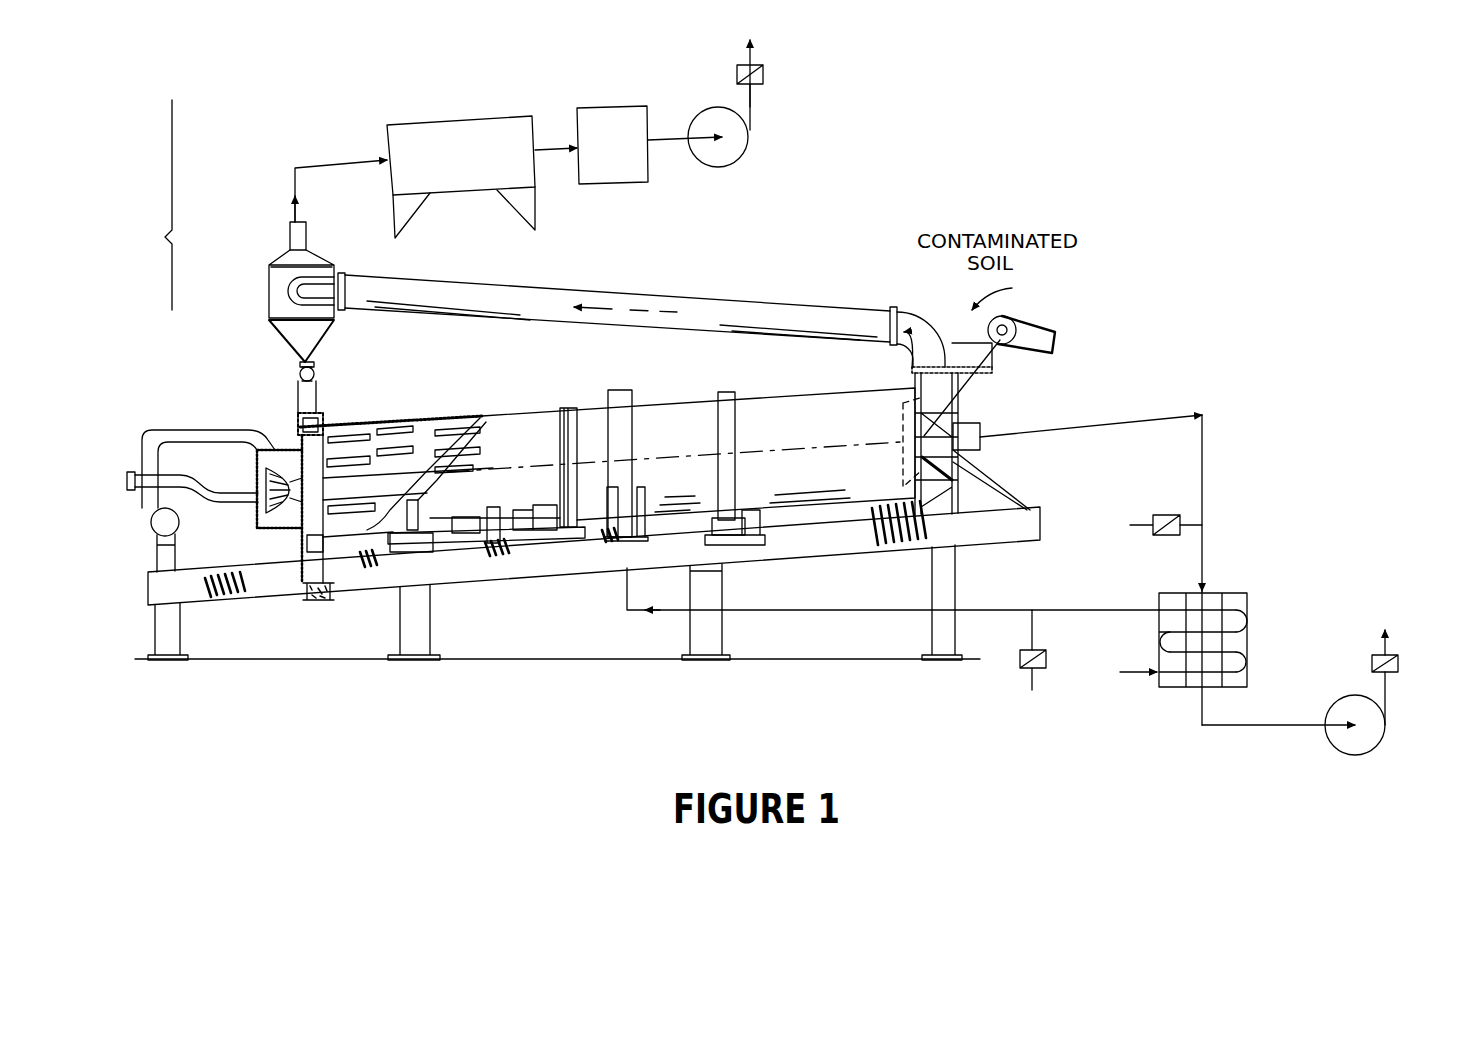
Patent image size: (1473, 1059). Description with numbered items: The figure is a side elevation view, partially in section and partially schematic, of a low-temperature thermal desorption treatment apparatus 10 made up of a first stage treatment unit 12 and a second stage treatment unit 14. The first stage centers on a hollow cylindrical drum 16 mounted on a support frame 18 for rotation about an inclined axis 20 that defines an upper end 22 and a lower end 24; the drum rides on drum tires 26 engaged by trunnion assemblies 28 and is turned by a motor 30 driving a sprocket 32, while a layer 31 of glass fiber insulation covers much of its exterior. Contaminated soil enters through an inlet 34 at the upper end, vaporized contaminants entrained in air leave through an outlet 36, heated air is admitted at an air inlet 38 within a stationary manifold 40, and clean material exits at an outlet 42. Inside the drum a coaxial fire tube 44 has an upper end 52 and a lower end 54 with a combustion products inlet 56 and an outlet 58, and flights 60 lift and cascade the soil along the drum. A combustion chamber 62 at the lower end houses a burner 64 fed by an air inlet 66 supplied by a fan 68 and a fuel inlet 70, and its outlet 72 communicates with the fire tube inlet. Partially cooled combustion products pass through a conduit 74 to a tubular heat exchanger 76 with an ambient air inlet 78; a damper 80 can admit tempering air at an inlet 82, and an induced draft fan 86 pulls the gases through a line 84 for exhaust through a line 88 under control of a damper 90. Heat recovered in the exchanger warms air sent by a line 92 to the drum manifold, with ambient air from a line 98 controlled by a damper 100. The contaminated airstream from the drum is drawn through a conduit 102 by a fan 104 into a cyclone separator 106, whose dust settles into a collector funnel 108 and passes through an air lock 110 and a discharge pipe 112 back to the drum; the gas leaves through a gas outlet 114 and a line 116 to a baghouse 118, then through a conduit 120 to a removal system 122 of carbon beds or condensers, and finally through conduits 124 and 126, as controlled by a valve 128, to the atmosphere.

The treatment apparatus 10 is at (975, 100).
The first stage treatment unit 12 is at (540, 365).
The second stage treatment unit 14 is at (150, 205).
The drum 16 is at (817, 392).
The support frame 18 is at (552, 572).
The axis 20 is at (820, 455).
The upper end 22 is at (908, 380).
The lower end 24 is at (300, 418).
The drum tires 26 is at (735, 433).
The trunnion assemblies 28 is at (748, 522).
The motor 30 is at (546, 505).
The layer of glass fiber thermal insulation 31 is at (360, 427).
The sprocket 32 is at (560, 462).
The inlet 34 is at (972, 393).
The outlet 36 is at (915, 390).
The air inlet 38 is at (636, 497).
The manifold 40 is at (633, 432).
The outlet 42 is at (330, 600).
The fire tube 44 is at (455, 430).
The upper end 52 is at (978, 422).
The lower end 54 is at (302, 535).
The inlet 56 is at (308, 488).
The outlet 58 is at (1032, 430).
The flights 60 is at (410, 446).
The combustion chamber 62 is at (255, 532).
The burner 64 is at (262, 494).
The air inlet 66 is at (262, 440).
The fan 68 is at (148, 545).
The fuel inlet 70 is at (118, 480).
The outlet 72 is at (270, 470).
The conduit 74 is at (1140, 418).
The tubular heat exchanger 76 is at (1250, 630).
The ambient air inlet 78 is at (1145, 673).
The damper 80 is at (1168, 515).
The inlet 82 is at (1198, 527).
The line 84 is at (1268, 725).
The induced draft fan 86 is at (1360, 695).
The line 88 is at (1392, 645).
The damper 90 is at (1400, 663).
The line 92 is at (1003, 610).
The line 98 is at (1040, 636).
The damper 100 is at (1048, 660).
The conduit 102 is at (830, 311).
The fan 104 is at (745, 160).
The cyclone separator 106 is at (268, 292).
The collector funnel 108 is at (328, 333).
The air lock 110 is at (316, 375).
The discharge pipe 112 is at (302, 405).
The gas outlet 114 is at (308, 236).
The line 116 is at (345, 157).
The baghouse 118 is at (479, 169).
The conduit 120 is at (543, 150).
The removal system 122 is at (632, 157).
The conduit 124 is at (665, 137).
The conduit 126 is at (752, 106).
The valve 128 is at (764, 73).